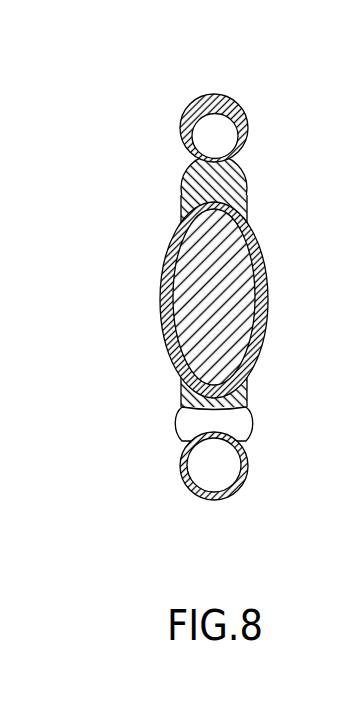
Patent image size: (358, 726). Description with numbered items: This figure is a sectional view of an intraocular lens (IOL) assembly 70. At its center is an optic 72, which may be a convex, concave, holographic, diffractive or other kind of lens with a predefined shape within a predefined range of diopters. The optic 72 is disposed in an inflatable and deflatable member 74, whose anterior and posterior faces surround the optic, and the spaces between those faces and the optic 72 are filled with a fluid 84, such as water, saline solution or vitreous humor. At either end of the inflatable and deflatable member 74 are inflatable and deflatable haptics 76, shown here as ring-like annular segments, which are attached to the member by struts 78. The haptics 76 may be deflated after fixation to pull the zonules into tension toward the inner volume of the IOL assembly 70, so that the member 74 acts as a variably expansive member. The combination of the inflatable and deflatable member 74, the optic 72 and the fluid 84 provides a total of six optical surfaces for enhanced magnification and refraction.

The intraocular lens (IOL) assembly 70 is at (234, 253).
The optic 72 is at (256, 263).
The inflatable and deflatable member 74 is at (240, 302).
The inflatable and deflatable haptics 76 is at (184, 131).
The struts 78 is at (247, 190).
The fluid 84 is at (258, 306).